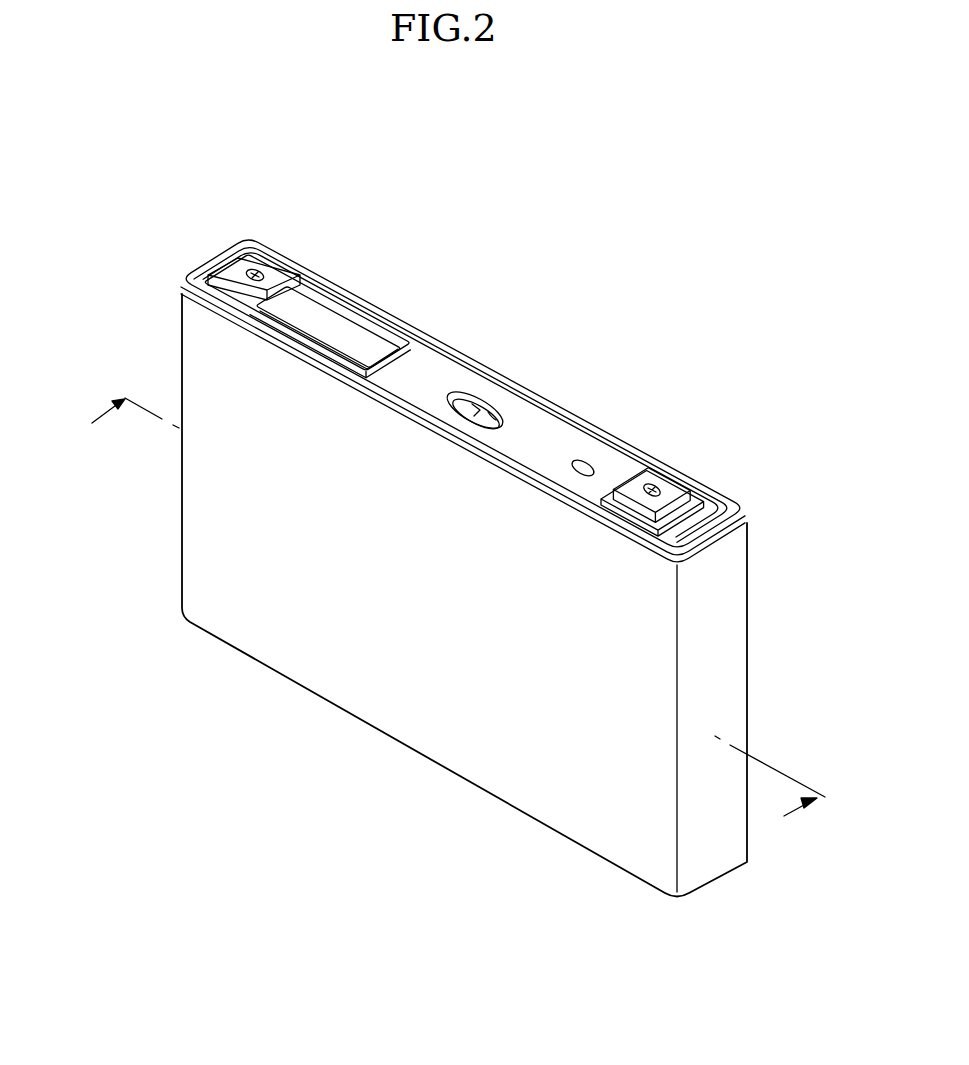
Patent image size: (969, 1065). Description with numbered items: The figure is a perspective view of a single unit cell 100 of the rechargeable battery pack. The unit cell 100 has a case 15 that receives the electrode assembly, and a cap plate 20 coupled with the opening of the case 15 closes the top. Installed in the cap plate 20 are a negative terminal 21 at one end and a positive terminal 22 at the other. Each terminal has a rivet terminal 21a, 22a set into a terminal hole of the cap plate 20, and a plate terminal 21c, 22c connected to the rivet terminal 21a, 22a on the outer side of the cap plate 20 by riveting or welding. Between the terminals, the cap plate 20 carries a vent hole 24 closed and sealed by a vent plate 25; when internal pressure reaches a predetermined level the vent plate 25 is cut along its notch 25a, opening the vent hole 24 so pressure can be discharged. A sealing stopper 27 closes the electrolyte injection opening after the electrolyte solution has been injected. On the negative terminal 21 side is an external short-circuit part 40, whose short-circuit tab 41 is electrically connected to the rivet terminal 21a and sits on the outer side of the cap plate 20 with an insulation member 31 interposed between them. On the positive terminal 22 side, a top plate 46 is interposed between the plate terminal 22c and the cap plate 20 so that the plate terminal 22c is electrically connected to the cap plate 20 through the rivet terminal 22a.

The unit cell 100 is at (557, 197).
The case 15 is at (385, 705).
The cap plate 20 is at (435, 368).
The negative terminal 21 is at (262, 270).
The rivet terminal 21a is at (250, 272).
The plate terminal 21c is at (283, 277).
The positive terminal 22 is at (657, 487).
The rivet terminal 22a is at (660, 496).
The plate terminal 22c is at (665, 523).
The vent hole 24 is at (476, 405).
The vent plate 25 is at (485, 412).
The notch 25a is at (490, 418).
The sealing stopper 27 is at (583, 463).
The insulation member 31 is at (327, 293).
The external short-circuit part 40 is at (368, 307).
The short-circuit tab 41 is at (378, 343).
The top plate 46 is at (672, 530).